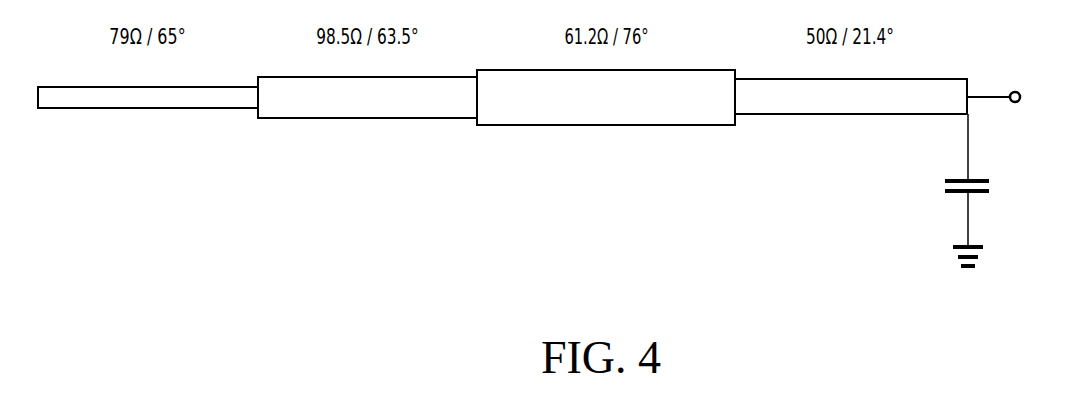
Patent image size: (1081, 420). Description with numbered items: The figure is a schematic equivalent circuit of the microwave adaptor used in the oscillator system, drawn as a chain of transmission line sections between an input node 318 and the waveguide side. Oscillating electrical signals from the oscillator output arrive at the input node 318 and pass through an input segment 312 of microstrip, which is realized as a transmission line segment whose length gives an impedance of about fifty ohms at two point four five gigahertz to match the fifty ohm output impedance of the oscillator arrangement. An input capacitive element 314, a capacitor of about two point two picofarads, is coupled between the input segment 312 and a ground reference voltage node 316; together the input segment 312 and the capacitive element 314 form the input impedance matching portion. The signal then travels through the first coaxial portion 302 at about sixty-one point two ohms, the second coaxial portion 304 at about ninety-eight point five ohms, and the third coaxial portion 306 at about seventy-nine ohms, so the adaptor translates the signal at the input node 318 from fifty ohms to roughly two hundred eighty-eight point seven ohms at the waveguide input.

The first coaxial portion 302 is at (603, 113).
The second coaxial portion 304 is at (353, 105).
The third coaxial portion 306 is at (140, 100).
The input segment 312 is at (830, 102).
The input capacitive element 314 is at (942, 192).
The ground reference voltage node 316 is at (968, 246).
The input node 318 is at (1017, 88).